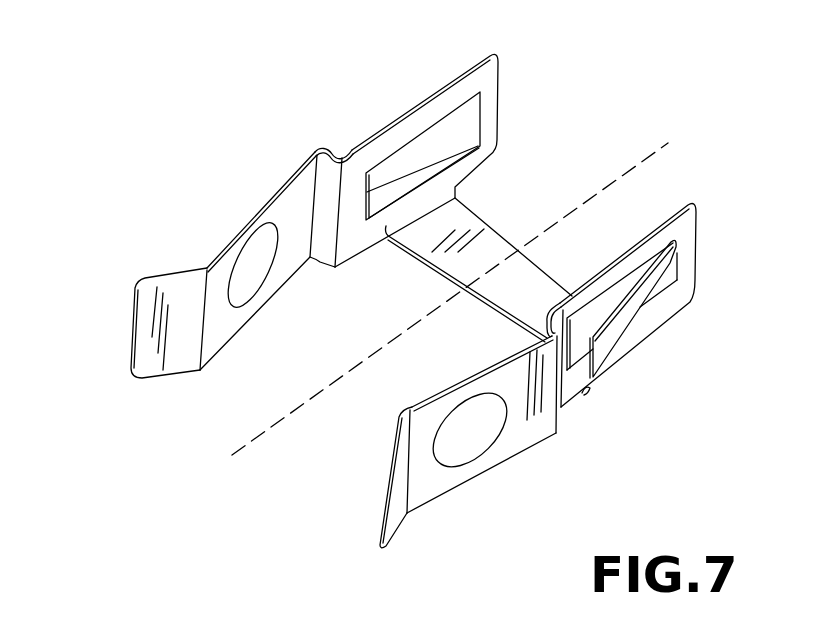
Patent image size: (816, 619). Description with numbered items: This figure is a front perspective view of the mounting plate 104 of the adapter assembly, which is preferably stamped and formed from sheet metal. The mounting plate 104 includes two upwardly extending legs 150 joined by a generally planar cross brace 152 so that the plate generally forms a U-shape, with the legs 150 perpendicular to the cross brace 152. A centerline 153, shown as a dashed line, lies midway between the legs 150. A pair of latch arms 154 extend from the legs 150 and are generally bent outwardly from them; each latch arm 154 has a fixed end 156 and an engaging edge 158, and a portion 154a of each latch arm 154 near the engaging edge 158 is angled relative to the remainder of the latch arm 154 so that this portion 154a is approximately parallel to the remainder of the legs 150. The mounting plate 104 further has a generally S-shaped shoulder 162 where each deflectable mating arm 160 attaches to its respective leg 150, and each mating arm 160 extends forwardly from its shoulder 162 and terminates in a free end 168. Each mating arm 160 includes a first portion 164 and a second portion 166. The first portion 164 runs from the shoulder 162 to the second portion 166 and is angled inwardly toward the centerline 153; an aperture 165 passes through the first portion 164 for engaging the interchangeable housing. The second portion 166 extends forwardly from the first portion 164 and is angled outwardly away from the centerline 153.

The mounting plate 104 is at (422, 287).
The leg 150 is at (452, 95).
The cross brace 152 is at (496, 248).
The centerline 153 is at (643, 158).
The latch arm 154 is at (362, 143).
The portion of latch arm 154a is at (598, 380).
The fixed end 156 is at (488, 110).
The engaging edge 158 is at (597, 391).
The mating arm 160 is at (315, 340).
The S-shaped shoulder 162 is at (323, 152).
The first portion 164 is at (273, 193).
The aperture 165 is at (252, 270).
The second portion 166 is at (227, 367).
The free end 168 is at (130, 333).